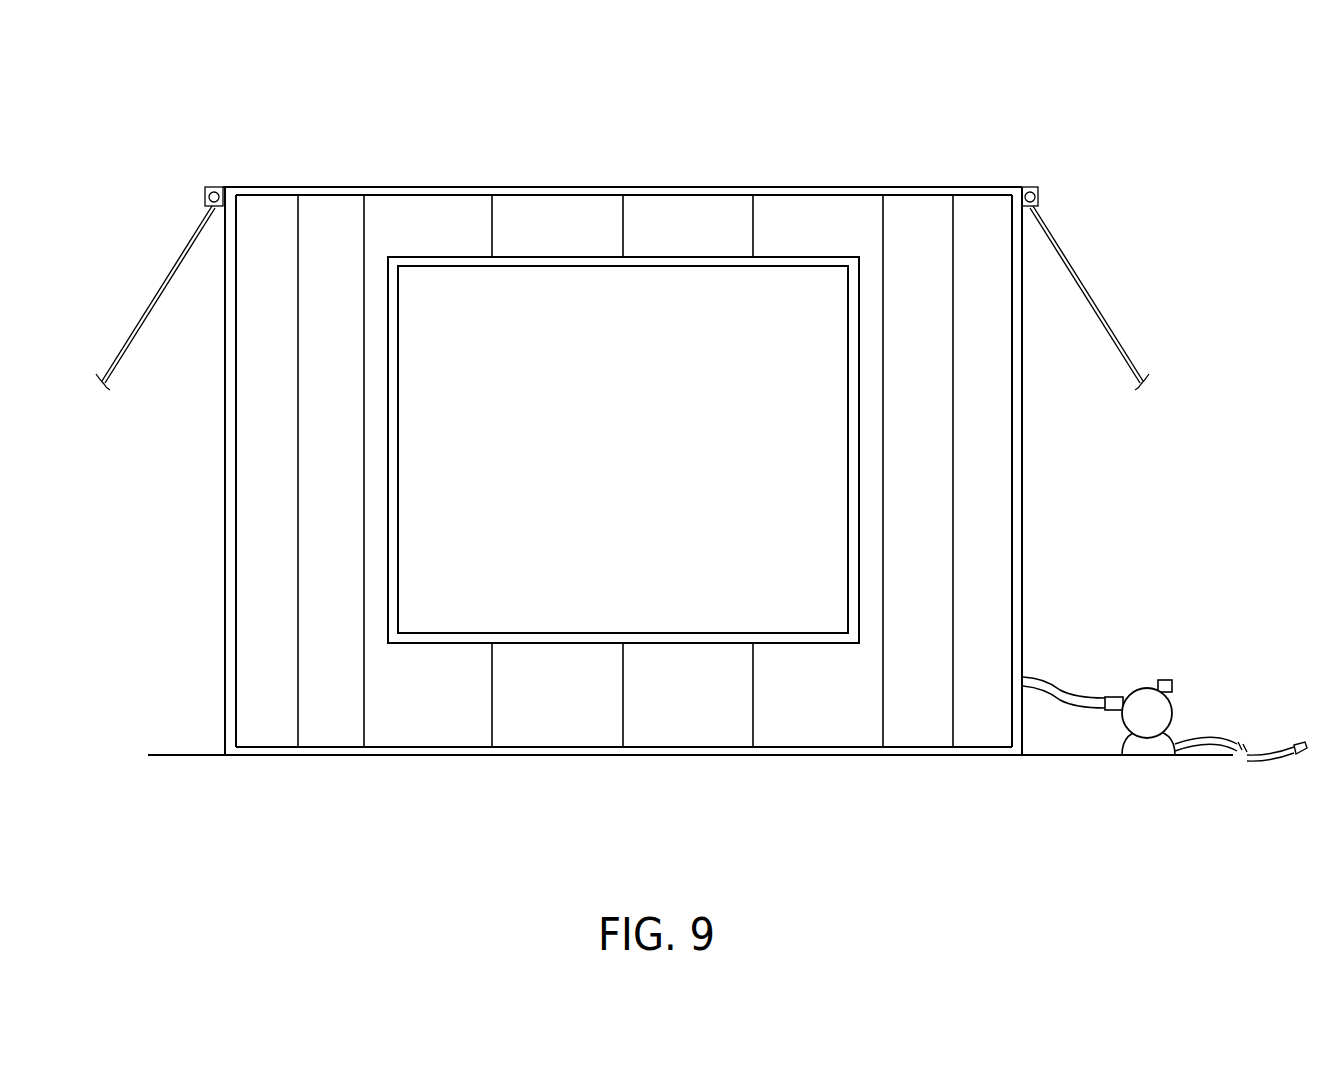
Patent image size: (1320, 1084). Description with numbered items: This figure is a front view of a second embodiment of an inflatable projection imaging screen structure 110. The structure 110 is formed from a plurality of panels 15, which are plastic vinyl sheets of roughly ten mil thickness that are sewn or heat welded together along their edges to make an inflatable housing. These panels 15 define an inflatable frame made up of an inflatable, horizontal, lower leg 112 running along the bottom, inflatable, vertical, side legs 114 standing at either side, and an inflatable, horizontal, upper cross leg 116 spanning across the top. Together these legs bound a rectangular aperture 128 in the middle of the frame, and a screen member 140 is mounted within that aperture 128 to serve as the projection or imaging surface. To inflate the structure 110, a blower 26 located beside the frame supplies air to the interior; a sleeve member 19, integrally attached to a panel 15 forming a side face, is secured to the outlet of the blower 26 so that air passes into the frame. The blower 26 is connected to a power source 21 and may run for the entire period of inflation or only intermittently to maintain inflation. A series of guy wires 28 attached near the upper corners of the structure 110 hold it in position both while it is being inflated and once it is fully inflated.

The inflatable projection imaging screen structure 110 is at (357, 144).
The panels 15 is at (465, 210).
The upper cross leg 116 is at (672, 208).
The lower leg 112 is at (692, 727).
The side legs 114 is at (263, 503).
The rectangular aperture 128 is at (832, 268).
The screen member 140 is at (633, 457).
The guy wires 28 is at (150, 300).
The sleeve member 19 is at (1068, 690).
The blower 26 is at (1172, 740).
The power source 21 is at (1284, 752).